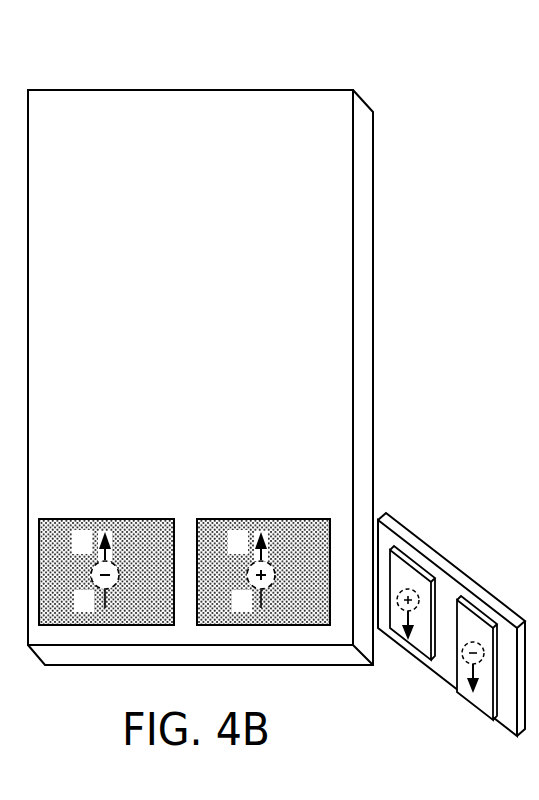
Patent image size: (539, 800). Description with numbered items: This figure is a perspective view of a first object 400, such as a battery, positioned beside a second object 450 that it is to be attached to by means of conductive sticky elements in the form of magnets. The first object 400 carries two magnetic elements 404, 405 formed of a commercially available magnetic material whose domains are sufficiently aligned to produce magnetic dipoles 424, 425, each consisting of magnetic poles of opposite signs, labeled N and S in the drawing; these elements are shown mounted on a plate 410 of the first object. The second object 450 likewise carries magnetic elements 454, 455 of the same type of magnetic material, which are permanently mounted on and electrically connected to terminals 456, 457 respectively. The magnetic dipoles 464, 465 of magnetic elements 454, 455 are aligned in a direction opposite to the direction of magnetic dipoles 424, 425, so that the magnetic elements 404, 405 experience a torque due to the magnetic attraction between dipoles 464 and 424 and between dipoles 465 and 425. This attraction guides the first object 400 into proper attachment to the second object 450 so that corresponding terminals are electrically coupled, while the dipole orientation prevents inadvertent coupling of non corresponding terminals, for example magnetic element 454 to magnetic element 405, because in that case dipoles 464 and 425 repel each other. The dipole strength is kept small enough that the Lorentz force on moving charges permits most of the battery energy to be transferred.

The first object 400 is at (445, 602).
The magnetic element 404 is at (400, 606).
The magnetic element 405 is at (481, 657).
The mounting plate 410 is at (461, 700).
The magnetic dipole 424 is at (394, 634).
The magnetic dipole 425 is at (487, 708).
The second object 450 is at (189, 68).
The magnetic element 454 is at (218, 528).
The magnetic element 455 is at (49, 528).
The terminal 456 is at (258, 606).
The terminal 457 is at (100, 606).
The magnetic dipole 464 is at (268, 552).
The magnetic dipole 465 is at (110, 553).